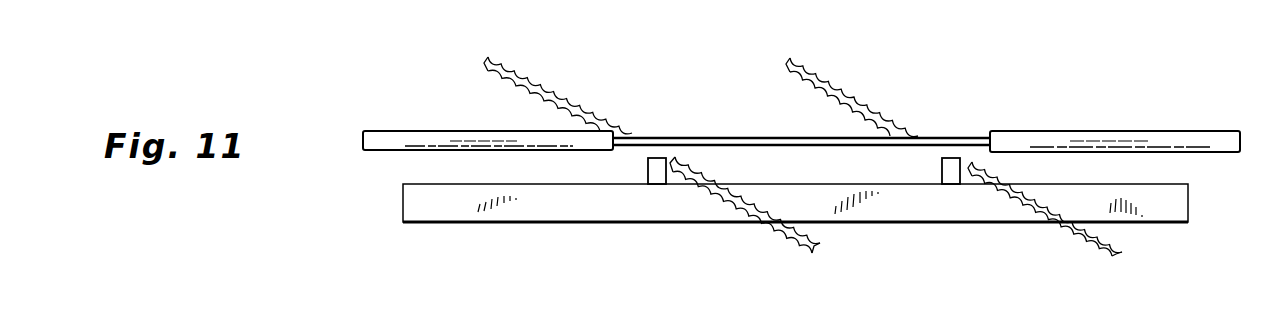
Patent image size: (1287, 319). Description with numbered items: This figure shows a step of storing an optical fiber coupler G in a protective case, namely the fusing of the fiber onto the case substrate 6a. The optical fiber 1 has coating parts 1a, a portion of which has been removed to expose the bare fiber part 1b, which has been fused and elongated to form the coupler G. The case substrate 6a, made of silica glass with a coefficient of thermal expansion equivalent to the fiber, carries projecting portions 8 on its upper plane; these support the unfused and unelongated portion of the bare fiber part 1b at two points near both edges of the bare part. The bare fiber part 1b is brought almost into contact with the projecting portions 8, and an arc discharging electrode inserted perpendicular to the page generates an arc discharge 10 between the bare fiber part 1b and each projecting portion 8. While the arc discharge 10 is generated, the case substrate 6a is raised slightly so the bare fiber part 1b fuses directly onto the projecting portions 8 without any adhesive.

The optical fiber 1 is at (1160, 108).
The coating part 1a is at (1057, 140).
The bare fiber part 1b is at (708, 137).
The optical fiber coupler G is at (948, 97).
The arc discharge 10 is at (563, 100).
The case substrate 6a is at (873, 208).
The projecting portion 8 is at (657, 177).